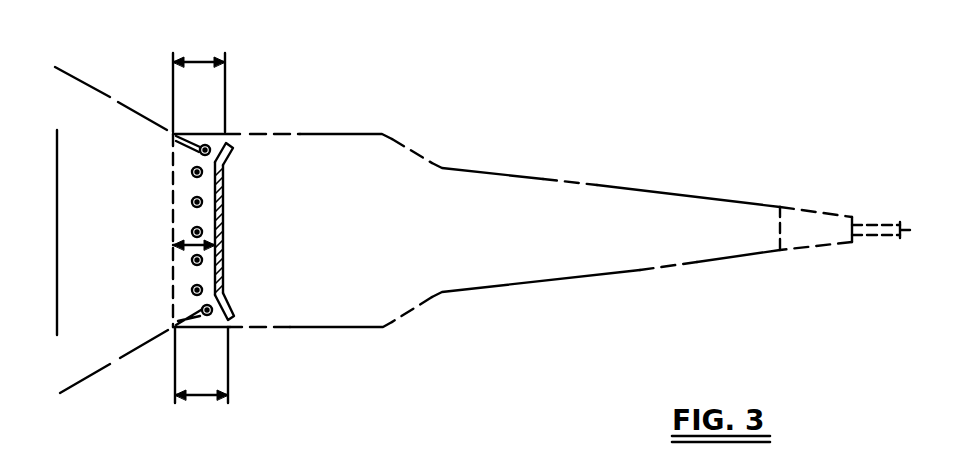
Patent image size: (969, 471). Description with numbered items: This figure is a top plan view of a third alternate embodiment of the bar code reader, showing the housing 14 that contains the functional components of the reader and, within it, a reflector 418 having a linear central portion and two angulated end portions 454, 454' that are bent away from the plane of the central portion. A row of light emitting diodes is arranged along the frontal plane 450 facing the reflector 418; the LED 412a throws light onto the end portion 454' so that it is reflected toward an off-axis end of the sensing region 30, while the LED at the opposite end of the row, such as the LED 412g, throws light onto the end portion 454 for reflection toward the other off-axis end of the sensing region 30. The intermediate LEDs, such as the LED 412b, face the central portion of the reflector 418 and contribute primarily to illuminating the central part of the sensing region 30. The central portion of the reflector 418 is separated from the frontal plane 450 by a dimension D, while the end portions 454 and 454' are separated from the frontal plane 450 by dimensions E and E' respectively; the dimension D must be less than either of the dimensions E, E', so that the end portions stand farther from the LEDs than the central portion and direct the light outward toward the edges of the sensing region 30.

The housing 14 is at (603, 183).
The sensing region 30 is at (57, 250).
The LED 412a is at (199, 150).
The LED 412b is at (192, 175).
The fastener 412g is at (201, 312).
The reflector 418 is at (223, 225).
The frontal plane 450 is at (173, 270).
The angulated end portion 454 is at (286, 329).
The angulated end portion 454' is at (254, 121).
The dimension D is at (185, 243).
The dimension E is at (215, 385).
The dimension E' is at (216, 69).